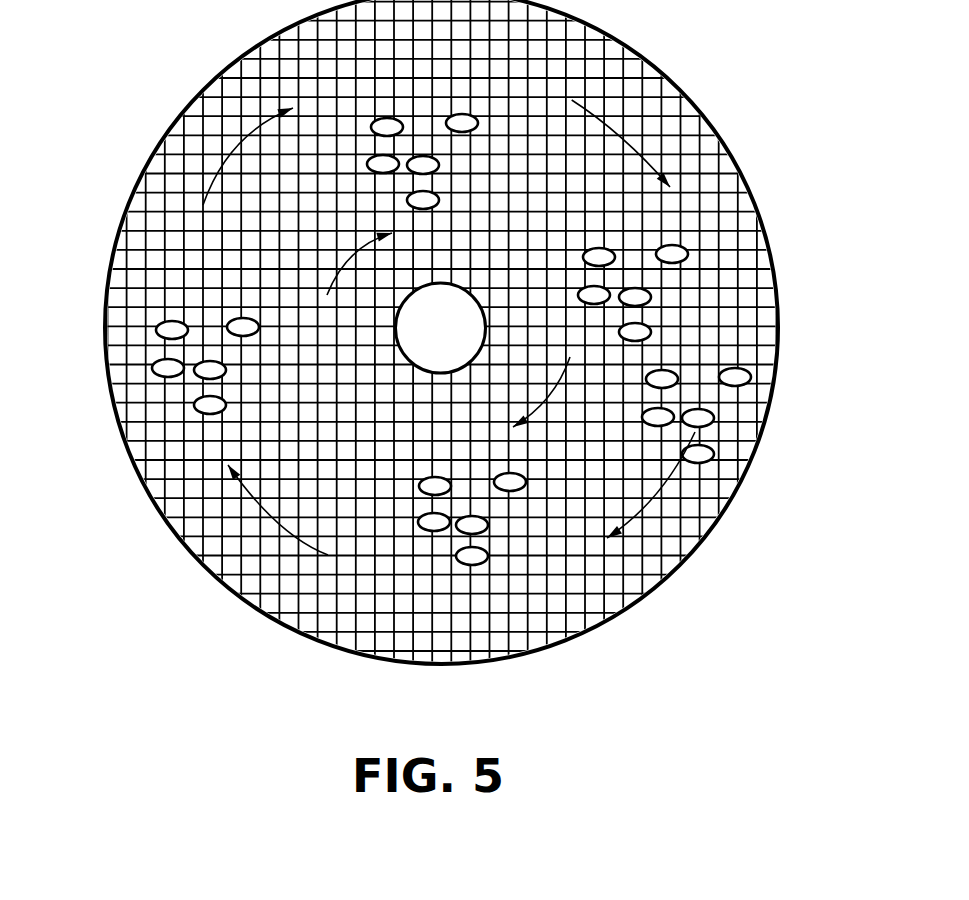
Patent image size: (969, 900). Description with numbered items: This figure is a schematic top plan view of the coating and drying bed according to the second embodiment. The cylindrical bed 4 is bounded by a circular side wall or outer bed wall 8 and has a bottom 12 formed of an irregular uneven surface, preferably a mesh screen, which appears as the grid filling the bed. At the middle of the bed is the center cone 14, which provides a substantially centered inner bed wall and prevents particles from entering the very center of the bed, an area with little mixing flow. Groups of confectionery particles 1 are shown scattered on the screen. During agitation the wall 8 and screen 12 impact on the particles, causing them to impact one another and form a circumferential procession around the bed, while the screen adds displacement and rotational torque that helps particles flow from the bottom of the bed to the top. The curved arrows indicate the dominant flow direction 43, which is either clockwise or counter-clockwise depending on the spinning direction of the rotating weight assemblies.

The confectionery particles 1 is at (150, 361).
The cylindrical bed 4 is at (113, 491).
The outer bed wall 8 is at (779, 340).
The bottom 12 is at (158, 248).
The center cone 14 is at (415, 383).
The dominant flow direction 43 is at (622, 128).